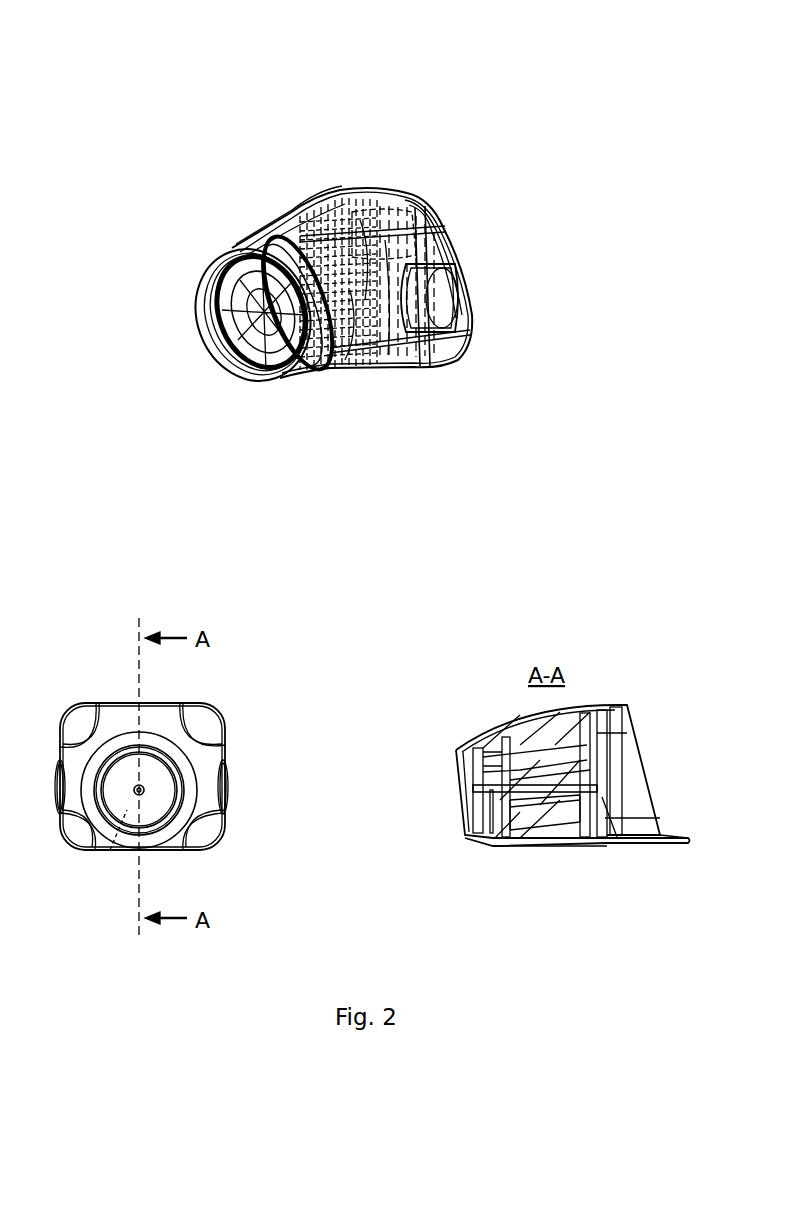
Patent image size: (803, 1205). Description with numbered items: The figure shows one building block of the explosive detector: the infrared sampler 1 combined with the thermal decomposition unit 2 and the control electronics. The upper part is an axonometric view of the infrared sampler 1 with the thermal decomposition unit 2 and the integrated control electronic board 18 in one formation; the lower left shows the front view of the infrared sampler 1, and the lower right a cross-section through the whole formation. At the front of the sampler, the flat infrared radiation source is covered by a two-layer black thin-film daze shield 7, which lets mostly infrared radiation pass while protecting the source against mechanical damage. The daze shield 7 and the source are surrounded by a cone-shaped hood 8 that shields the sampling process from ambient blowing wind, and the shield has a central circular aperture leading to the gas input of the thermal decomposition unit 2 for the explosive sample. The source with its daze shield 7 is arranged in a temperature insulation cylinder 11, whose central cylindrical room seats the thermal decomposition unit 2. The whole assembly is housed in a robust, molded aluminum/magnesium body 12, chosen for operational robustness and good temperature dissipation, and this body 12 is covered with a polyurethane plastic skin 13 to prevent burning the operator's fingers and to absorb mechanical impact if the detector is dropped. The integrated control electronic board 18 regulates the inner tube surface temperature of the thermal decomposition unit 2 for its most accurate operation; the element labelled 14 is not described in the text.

The infrared sampler 1 is at (400, 123).
The thermal decomposition unit 2 is at (302, 377).
The black thin-film daze shield 7 is at (215, 350).
The cone-shaped hood 8 is at (232, 253).
The temperature insulation cylinder 11 is at (423, 368).
The molded aluminum/magnesium body 12 is at (465, 300).
The polyurethane plastic skin 13 is at (282, 220).
The front sleeve 14 is at (208, 308).
The integrated control electronic board 18 is at (442, 222).